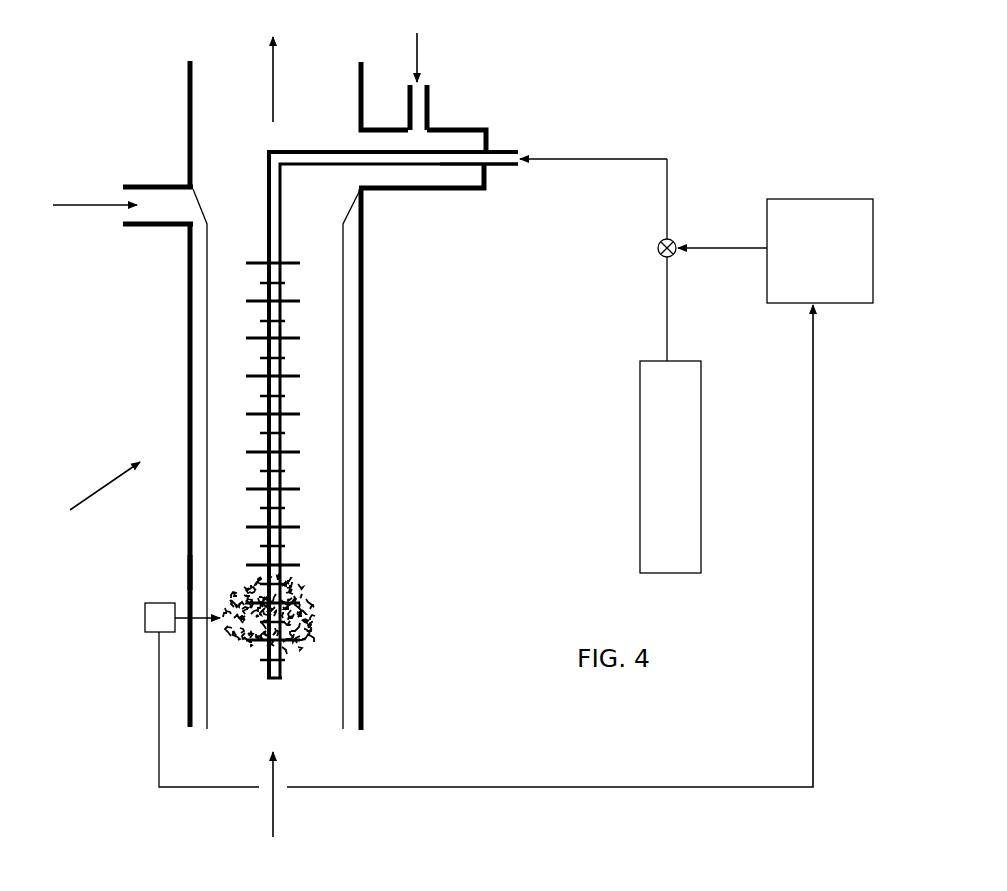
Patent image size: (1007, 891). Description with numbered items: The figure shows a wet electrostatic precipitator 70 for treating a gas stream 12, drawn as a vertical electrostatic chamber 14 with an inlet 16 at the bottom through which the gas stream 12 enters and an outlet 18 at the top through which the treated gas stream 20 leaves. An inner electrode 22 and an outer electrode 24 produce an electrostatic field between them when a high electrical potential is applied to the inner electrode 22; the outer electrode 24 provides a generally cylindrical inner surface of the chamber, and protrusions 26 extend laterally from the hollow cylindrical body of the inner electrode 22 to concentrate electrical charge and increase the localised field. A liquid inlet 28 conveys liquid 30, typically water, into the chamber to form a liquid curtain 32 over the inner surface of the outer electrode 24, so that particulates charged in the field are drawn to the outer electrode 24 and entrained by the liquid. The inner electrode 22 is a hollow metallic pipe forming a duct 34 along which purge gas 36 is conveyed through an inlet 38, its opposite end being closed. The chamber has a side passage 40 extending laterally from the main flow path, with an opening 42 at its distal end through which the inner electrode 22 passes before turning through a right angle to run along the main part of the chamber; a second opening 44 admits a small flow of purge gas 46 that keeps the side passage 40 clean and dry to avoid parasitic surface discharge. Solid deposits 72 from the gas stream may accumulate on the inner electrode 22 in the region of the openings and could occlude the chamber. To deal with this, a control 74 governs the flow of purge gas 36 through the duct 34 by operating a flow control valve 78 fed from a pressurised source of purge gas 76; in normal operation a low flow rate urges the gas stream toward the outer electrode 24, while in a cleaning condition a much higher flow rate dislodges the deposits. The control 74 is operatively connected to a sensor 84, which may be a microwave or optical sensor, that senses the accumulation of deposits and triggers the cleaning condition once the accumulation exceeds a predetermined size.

The gas stream 12 is at (275, 810).
The electrostatic chamber 14 is at (323, 340).
The inlet 16 is at (363, 705).
The outlet 18 is at (187, 72).
The treated gas stream 20 is at (276, 65).
The inner electrode 22 is at (273, 480).
The outer electrode 24 is at (187, 377).
The protrusions 26 is at (283, 528).
The liquid inlet 28 is at (138, 226).
The liquid 30 is at (80, 206).
The liquid curtain 32 is at (197, 571).
The duct 34 is at (273, 232).
The purge gas 36 is at (593, 246).
The inlet 38 is at (503, 165).
The side passage 40 is at (450, 190).
The opening 42 is at (485, 150).
The second opening 44 is at (430, 112).
The purge gas 46 is at (421, 45).
The wet electrostatic precipitator 70 is at (88, 494).
The solid deposits 72 is at (317, 612).
The control 74 is at (580, 493).
The source of purge gas 76 is at (670, 467).
The flow control valve 78 is at (660, 252).
The sensor 84 is at (145, 620).